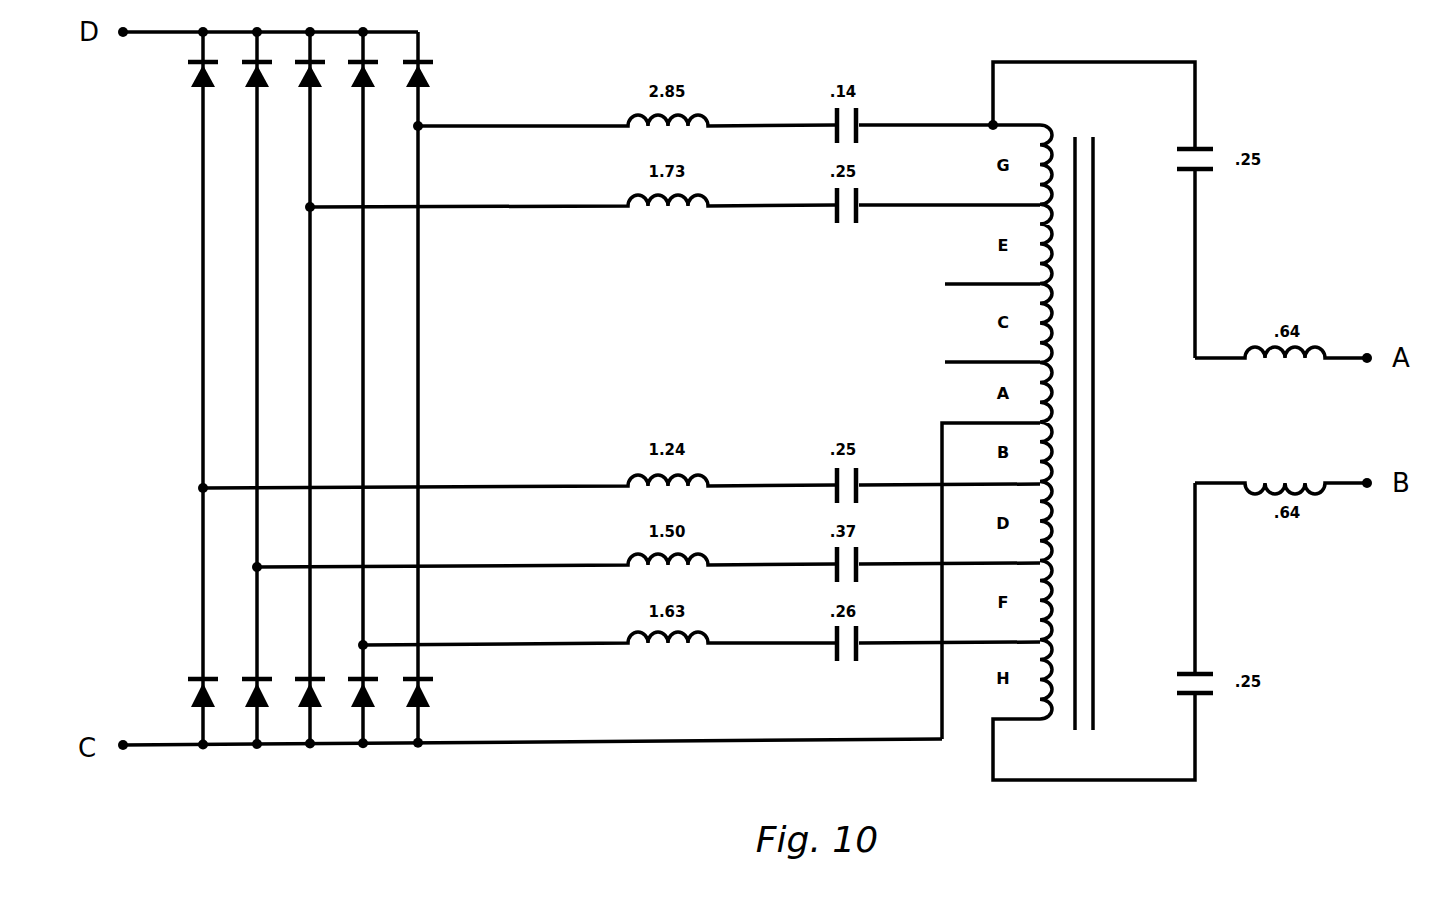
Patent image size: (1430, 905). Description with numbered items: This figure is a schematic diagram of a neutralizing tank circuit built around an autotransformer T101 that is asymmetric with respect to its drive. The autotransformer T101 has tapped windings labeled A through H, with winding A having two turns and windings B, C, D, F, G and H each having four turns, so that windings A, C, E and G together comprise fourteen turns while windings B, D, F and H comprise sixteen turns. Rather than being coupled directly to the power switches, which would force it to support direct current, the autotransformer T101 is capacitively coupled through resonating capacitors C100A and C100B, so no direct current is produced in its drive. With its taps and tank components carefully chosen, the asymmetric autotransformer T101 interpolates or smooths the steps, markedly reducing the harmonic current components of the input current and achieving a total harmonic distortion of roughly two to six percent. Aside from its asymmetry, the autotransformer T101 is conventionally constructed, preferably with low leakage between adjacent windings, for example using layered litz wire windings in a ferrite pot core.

The autotransformer T101 is at (1094, 421).
The resonating capacitor C100A is at (1227, 228).
The resonating capacitor C100B is at (1227, 588).